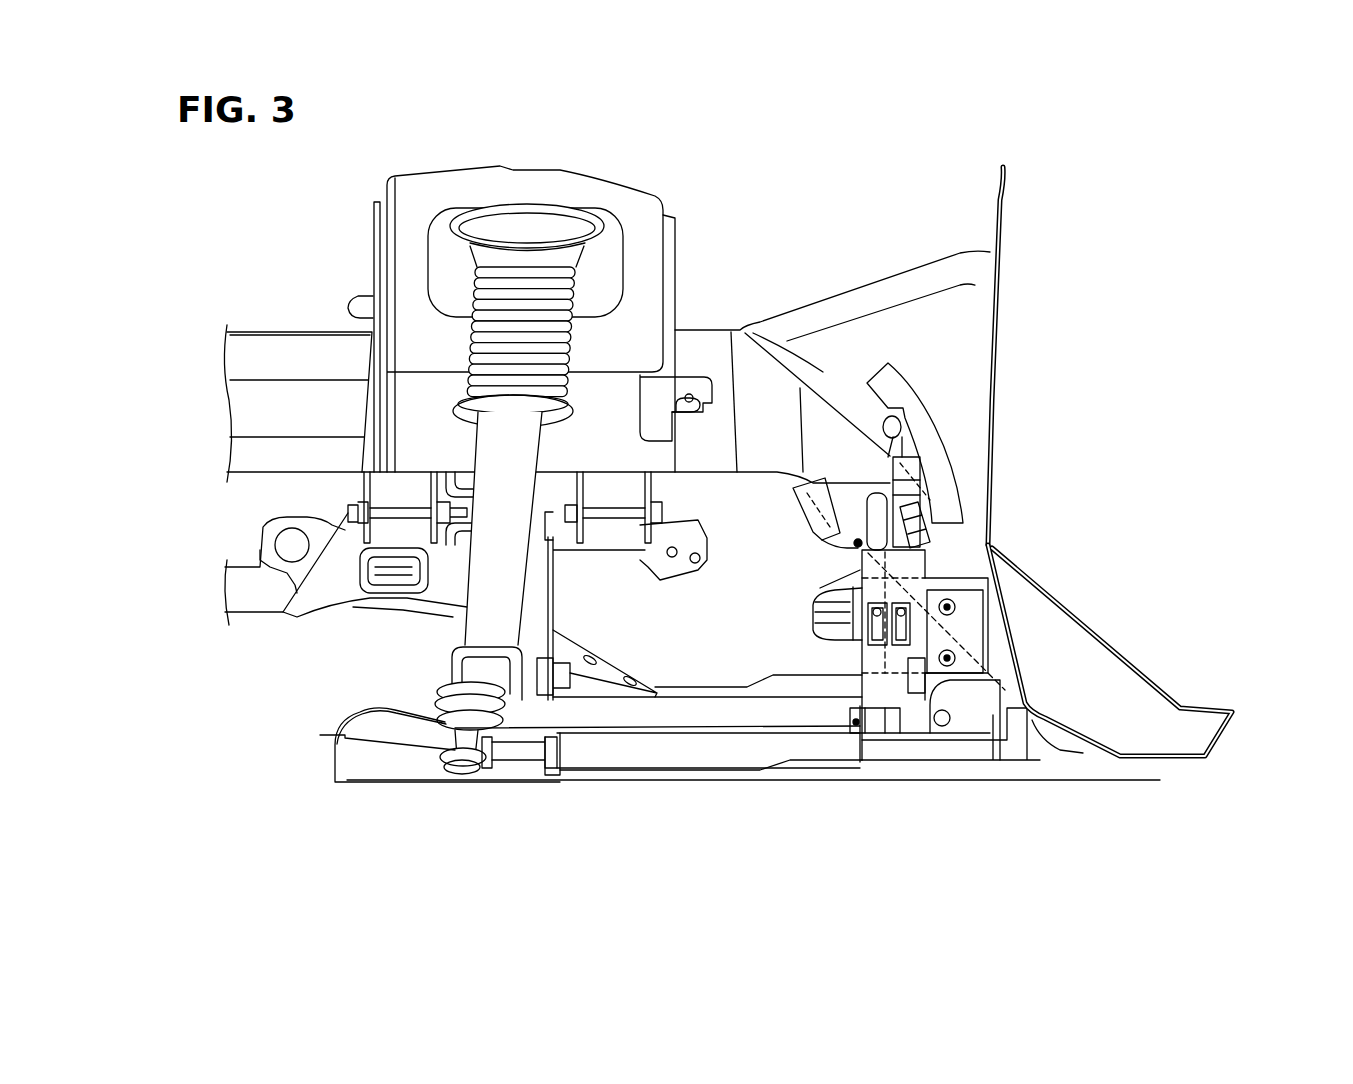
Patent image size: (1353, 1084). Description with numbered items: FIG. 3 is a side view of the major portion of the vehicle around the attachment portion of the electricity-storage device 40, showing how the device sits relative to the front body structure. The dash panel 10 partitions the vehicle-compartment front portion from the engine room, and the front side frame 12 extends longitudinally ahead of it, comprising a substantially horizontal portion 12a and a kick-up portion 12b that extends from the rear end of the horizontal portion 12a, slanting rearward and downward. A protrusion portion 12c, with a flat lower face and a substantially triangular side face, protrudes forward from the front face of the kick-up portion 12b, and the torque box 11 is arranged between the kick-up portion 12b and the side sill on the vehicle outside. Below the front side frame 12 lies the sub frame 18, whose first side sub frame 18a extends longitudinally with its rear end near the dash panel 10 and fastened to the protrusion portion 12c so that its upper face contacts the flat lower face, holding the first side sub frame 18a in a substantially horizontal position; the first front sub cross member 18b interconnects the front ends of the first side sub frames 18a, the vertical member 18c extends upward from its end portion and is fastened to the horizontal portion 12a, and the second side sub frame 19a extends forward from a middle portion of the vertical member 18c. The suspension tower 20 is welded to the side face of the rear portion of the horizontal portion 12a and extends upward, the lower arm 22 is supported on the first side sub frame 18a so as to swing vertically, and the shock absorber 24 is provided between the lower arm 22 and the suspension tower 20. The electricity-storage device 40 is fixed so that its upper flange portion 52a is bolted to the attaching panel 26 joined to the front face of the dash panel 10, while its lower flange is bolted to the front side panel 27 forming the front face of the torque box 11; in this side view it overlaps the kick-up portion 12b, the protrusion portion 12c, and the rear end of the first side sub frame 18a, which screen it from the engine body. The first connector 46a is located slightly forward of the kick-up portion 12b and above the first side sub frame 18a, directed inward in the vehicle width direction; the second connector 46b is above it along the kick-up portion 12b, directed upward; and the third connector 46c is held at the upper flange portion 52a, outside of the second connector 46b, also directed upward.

The dash panel 10 is at (1004, 207).
The torque box 11 is at (1168, 742).
The front side frame 12 is at (235, 407).
The horizontal portion 12a is at (315, 345).
The kick-up portion 12b is at (858, 577).
The protrusion portion 12c is at (860, 665).
The sub frame 18 is at (733, 770).
The first side sub frame 18a is at (807, 747).
The first front sub cross member 18b is at (377, 723).
The vertical member 18c is at (550, 608).
The second side sub frame 19a is at (248, 614).
The suspension tower 20 is at (620, 206).
The lower arm 22 is at (628, 722).
The shock absorber 24 is at (493, 548).
The attaching panel 26 is at (933, 428).
The front side panel 27 is at (1022, 712).
The electricity-storage device 40 is at (943, 547).
The first connector 46a is at (812, 620).
The second connector 46b is at (810, 517).
The third connector 46c is at (925, 510).
The upper flange portion 52a is at (925, 465).